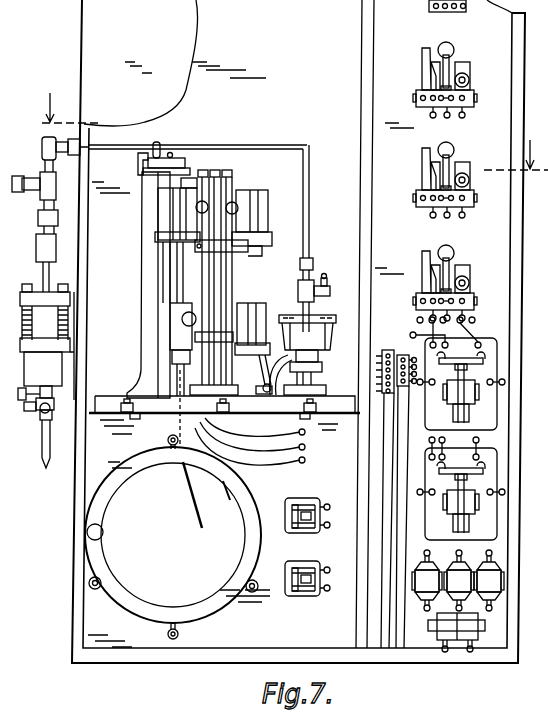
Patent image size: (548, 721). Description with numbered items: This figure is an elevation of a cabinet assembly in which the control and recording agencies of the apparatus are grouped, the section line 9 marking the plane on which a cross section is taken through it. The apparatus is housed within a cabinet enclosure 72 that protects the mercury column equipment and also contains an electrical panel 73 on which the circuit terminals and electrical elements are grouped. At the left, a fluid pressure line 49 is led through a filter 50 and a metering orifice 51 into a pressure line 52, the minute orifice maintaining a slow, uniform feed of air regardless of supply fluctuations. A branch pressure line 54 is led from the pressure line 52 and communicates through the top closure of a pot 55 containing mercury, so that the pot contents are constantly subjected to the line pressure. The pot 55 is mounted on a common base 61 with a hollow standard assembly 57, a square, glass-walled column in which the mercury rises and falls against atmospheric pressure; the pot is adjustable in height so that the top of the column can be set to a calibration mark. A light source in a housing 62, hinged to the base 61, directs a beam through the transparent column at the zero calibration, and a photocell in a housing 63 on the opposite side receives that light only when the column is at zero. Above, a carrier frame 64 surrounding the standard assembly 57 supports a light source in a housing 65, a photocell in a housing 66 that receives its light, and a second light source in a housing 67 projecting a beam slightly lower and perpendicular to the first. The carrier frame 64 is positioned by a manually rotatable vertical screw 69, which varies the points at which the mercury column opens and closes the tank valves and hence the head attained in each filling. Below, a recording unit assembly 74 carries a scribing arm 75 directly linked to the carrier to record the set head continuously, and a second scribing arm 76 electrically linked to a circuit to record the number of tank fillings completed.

The section line 9— 9 is at (290, 131).
The fluid pressure line 49 is at (38, 462).
The filter 50 is at (47, 342).
The metering orifice 51 is at (37, 249).
The pressure line 52 is at (36, 178).
The branch pressure line 54 is at (216, 148).
The pot 55 is at (303, 355).
The hollow standard assembly 57 is at (222, 272).
The base 61 is at (224, 430).
The housing 62 is at (250, 312).
The housing 63 is at (180, 312).
The carrier frame 64 is at (244, 252).
The housing 65 is at (268, 194).
The housing 66 is at (190, 185).
The housing 67 is at (165, 215).
The screw 69 is at (172, 156).
The cabinet enclosure 72 is at (298, 63).
The electrical panel 73 is at (449, 181).
The recording unit assembly 74 is at (176, 577).
The scribing arm 75 is at (185, 489).
The second scribing arm 76 is at (228, 497).